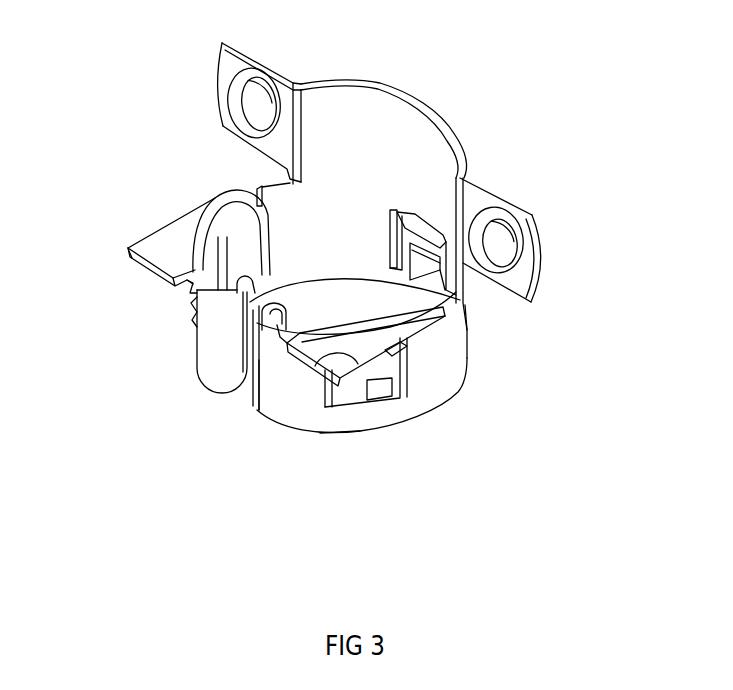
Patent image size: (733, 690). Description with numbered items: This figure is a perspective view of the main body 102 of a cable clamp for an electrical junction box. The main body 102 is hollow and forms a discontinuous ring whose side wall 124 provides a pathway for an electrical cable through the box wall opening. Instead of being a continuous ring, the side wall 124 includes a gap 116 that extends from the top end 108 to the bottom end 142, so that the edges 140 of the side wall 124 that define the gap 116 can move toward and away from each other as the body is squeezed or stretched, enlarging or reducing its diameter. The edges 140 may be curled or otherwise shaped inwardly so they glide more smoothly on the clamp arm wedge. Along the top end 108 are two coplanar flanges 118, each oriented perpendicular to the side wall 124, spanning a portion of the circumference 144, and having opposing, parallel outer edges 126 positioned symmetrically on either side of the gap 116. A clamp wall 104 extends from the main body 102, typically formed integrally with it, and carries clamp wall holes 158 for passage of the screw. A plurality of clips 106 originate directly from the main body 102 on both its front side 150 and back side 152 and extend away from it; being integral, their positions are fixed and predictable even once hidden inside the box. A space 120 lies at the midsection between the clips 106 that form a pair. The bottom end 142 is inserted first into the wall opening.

The main body 102 is at (573, 378).
The clamp wall 104 is at (490, 143).
The clips 106 is at (245, 243).
The top end 108 is at (194, 218).
The gap 116 is at (254, 397).
The flange 118 is at (170, 258).
The space 120 is at (407, 370).
The side wall 124 is at (212, 330).
The outer edge 126 is at (131, 246).
The edges 140 is at (227, 240).
The bottom end 142 is at (345, 430).
The circumference 144 is at (455, 315).
The front side 150 is at (300, 383).
The back side 152 is at (470, 317).
The clamp wall holes 158 is at (502, 240).